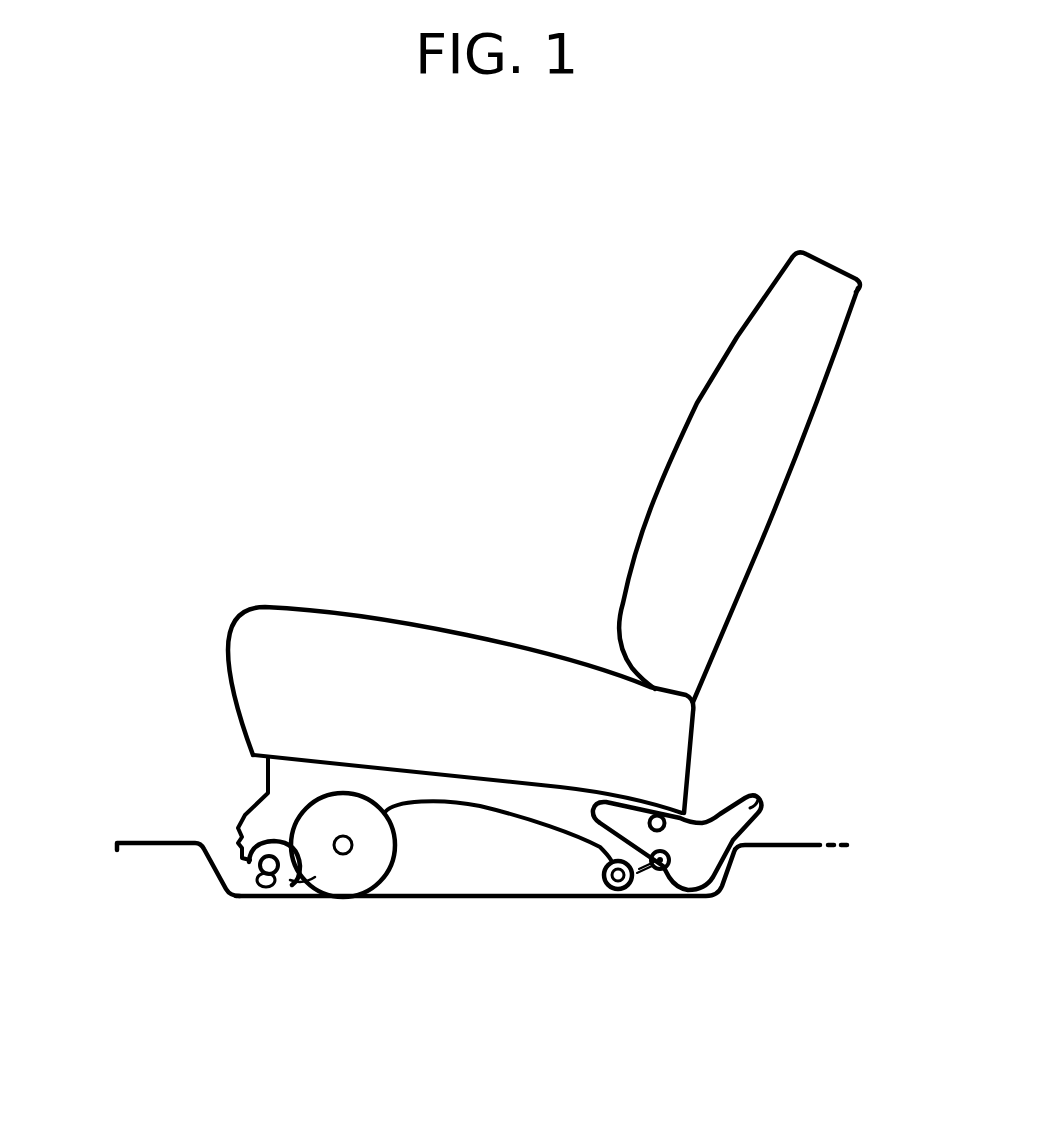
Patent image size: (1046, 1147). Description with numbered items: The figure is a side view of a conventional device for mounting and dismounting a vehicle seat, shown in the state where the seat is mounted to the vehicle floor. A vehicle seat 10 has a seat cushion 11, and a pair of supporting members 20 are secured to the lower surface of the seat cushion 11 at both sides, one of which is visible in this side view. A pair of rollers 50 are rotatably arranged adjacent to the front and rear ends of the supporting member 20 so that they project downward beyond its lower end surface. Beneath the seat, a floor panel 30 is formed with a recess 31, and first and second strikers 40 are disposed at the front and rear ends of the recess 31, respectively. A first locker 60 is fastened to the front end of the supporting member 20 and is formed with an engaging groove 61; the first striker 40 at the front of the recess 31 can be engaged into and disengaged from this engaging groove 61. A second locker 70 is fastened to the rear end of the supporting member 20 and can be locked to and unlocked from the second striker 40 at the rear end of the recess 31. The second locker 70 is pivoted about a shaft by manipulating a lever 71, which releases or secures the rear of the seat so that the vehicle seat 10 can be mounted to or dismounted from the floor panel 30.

The vehicle seat 10 is at (392, 325).
The seat cushion 11 is at (317, 640).
The supporting member 20 is at (285, 793).
The floor panel 30 is at (148, 843).
The recess 31 is at (487, 885).
The striker 40 is at (257, 866).
The roller 50 is at (368, 875).
The first locker 60 is at (291, 873).
The engaging groove 61 is at (271, 890).
The second locker 70 is at (731, 797).
The lever 71 is at (752, 803).